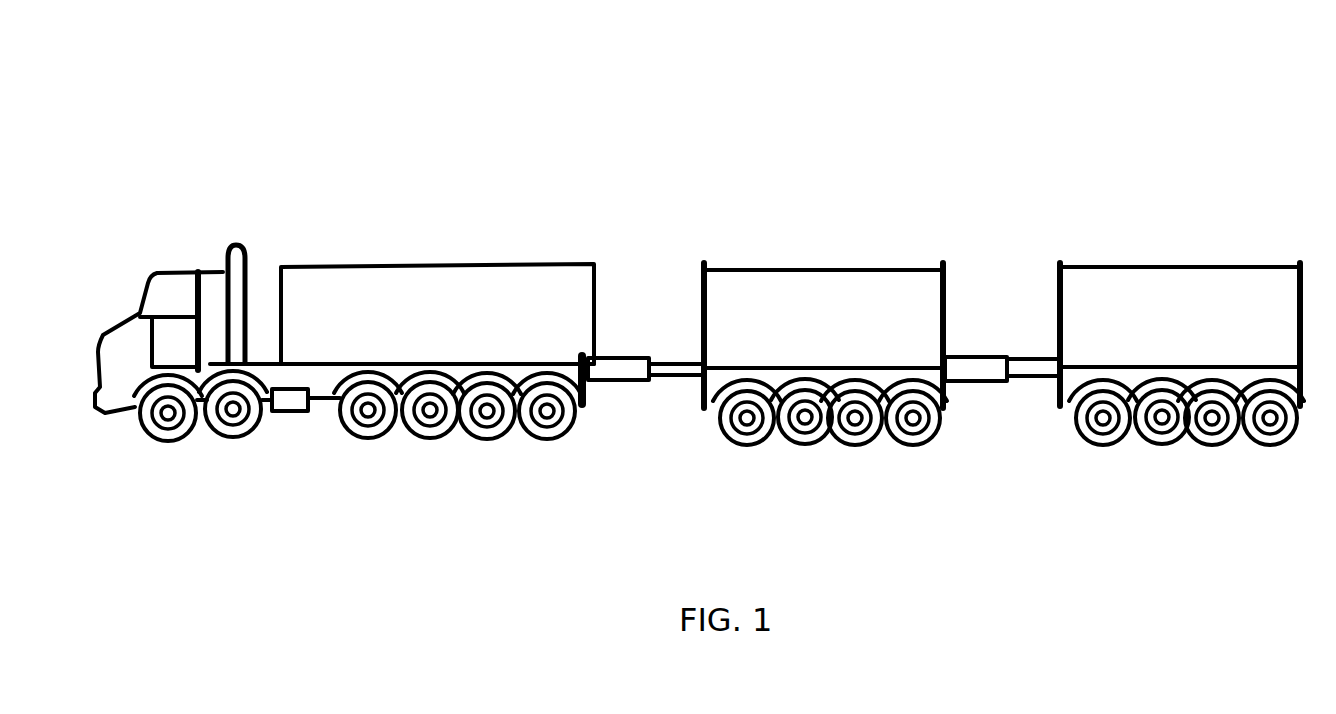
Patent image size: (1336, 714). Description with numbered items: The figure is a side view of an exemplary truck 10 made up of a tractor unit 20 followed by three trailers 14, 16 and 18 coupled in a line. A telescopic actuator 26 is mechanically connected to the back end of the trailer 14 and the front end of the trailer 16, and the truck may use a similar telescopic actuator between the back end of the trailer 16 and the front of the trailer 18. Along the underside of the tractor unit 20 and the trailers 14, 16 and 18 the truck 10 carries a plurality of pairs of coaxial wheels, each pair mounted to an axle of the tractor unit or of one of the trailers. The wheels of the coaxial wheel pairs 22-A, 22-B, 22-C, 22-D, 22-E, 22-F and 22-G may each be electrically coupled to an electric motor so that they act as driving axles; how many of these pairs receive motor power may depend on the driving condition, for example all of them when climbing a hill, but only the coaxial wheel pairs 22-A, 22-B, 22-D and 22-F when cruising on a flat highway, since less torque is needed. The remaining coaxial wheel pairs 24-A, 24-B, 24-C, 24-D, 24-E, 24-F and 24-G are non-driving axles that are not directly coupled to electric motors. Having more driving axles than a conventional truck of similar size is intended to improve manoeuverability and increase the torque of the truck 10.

The truck 10 is at (237, 78).
The trailer 14 is at (423, 267).
The trailer 16 is at (805, 272).
The trailer 18 is at (1148, 265).
The tractor unit 20 is at (189, 270).
The telescopic actuator 26 is at (612, 355).
The coaxial wheel pair 22-A is at (182, 420).
The coaxial wheel pair 22-B is at (498, 418).
The coaxial wheel pair 22-C is at (563, 418).
The coaxial wheel pair 22-D is at (730, 418).
The coaxial wheel pair 22-E is at (872, 420).
The coaxial wheel pair 22-F is at (1083, 418).
The coaxial wheel pair 22-G is at (1220, 420).
The coaxial wheel pair 24-A is at (247, 415).
The coaxial wheel pair 24-B is at (352, 420).
The coaxial wheel pair 24-C is at (415, 417).
The coaxial wheel pair 24-D is at (788, 420).
The coaxial wheel pair 24-E is at (928, 418).
The coaxial wheel pair 24-F is at (1150, 418).
The coaxial wheel pair 24-G is at (1287, 420).